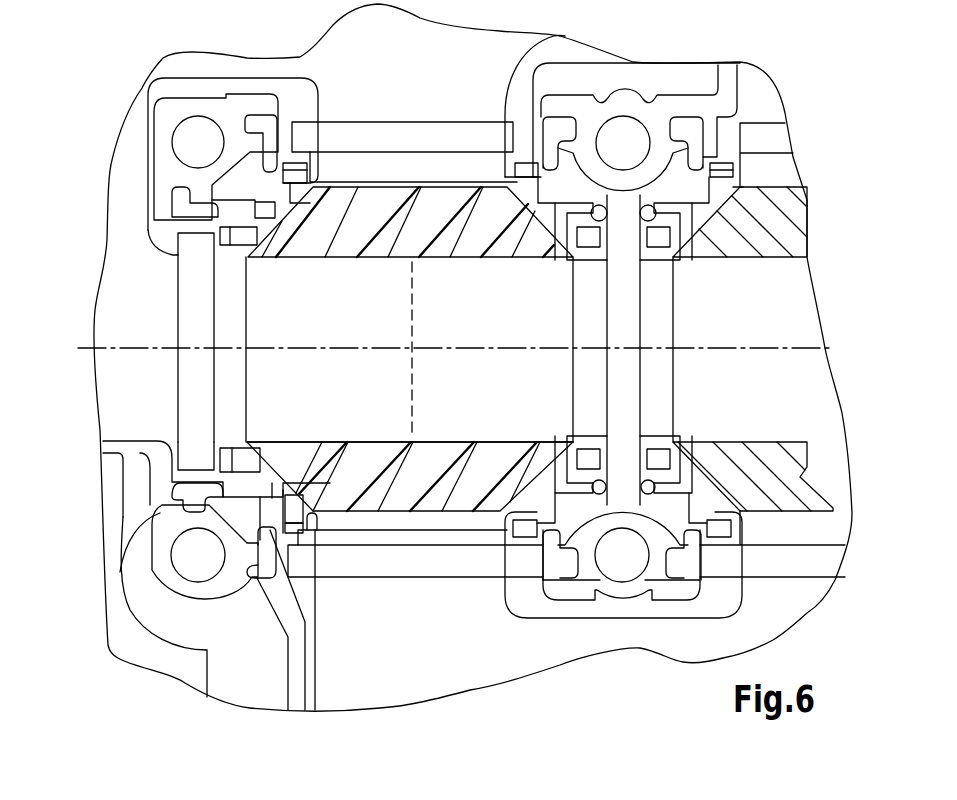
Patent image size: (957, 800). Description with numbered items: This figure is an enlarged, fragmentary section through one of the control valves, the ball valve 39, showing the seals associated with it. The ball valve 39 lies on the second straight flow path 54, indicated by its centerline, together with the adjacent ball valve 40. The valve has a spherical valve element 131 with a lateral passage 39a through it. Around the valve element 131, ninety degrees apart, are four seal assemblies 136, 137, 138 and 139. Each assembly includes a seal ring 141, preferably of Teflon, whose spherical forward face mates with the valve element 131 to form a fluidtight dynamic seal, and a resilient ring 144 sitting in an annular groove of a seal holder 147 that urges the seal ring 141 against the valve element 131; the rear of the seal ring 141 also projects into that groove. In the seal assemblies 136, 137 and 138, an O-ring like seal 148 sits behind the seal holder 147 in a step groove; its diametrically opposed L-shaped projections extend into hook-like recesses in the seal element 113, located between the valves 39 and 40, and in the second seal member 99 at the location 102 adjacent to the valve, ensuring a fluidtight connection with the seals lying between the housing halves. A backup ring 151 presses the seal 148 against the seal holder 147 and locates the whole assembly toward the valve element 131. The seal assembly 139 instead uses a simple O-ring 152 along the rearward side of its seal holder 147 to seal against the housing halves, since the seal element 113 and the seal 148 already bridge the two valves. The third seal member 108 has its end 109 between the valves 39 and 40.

The ball valve 39 is at (445, 531).
The lateral passage 39a is at (437, 441).
The ball valve 40 is at (800, 513).
The second straight flow path 54 is at (758, 348).
The second seal member 99 is at (113, 455).
The location 102 is at (172, 590).
The third seal member 108 is at (537, 60).
The end 109 is at (628, 105).
The seal element 113 is at (622, 593).
The spherical valve element 131 is at (245, 438).
The seal assembly 136 is at (325, 535).
The seal assembly 137 is at (178, 256).
The seal assembly 138 is at (328, 115).
The seal assembly 139 is at (618, 285).
The seal ring 141 is at (297, 188).
The resilient ring 144 is at (300, 531).
The seal holder 147 is at (170, 507).
The O-ring like seal 148 is at (298, 600).
The backup ring 151 is at (307, 562).
The O-ring 152 is at (606, 487).